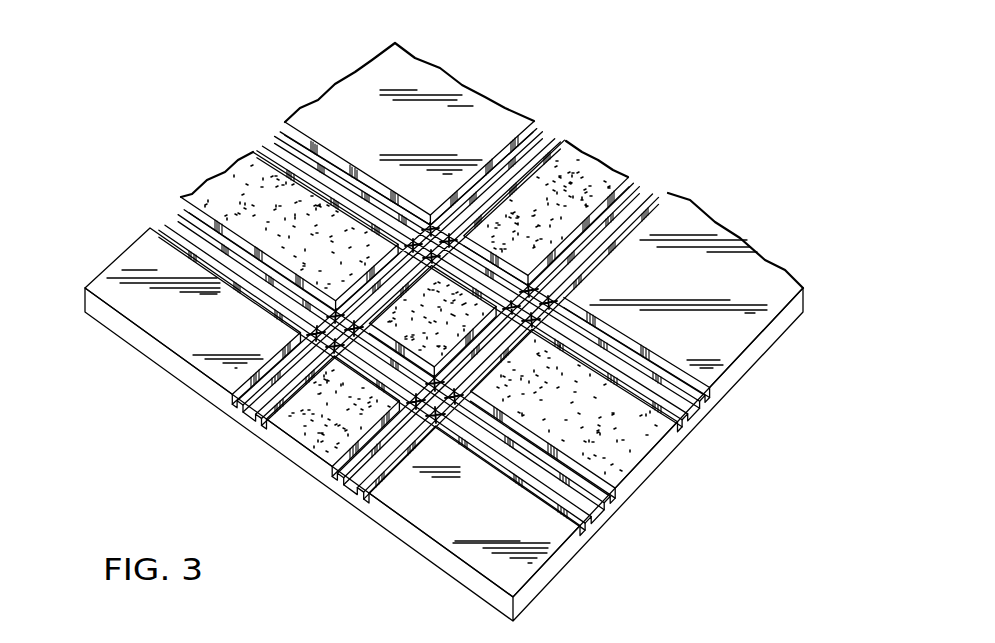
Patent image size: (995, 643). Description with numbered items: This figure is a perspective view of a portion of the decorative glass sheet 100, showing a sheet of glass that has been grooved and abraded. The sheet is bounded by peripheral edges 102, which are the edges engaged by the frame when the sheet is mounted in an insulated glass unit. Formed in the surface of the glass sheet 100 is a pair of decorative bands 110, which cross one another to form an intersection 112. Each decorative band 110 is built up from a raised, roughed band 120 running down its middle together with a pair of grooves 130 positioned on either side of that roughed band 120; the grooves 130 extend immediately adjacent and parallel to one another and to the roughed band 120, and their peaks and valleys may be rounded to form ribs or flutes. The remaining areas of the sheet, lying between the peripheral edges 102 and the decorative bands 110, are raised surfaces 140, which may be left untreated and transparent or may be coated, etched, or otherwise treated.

The decorative glass sheet 100 is at (640, 143).
The peripheral edges 102 is at (567, 558).
The decorative bands 110 is at (564, 120).
The intersection 112 is at (443, 438).
The raised, roughed band 120 is at (312, 437).
The grooves 130 is at (250, 413).
The raised surfaces 140 is at (332, 108).